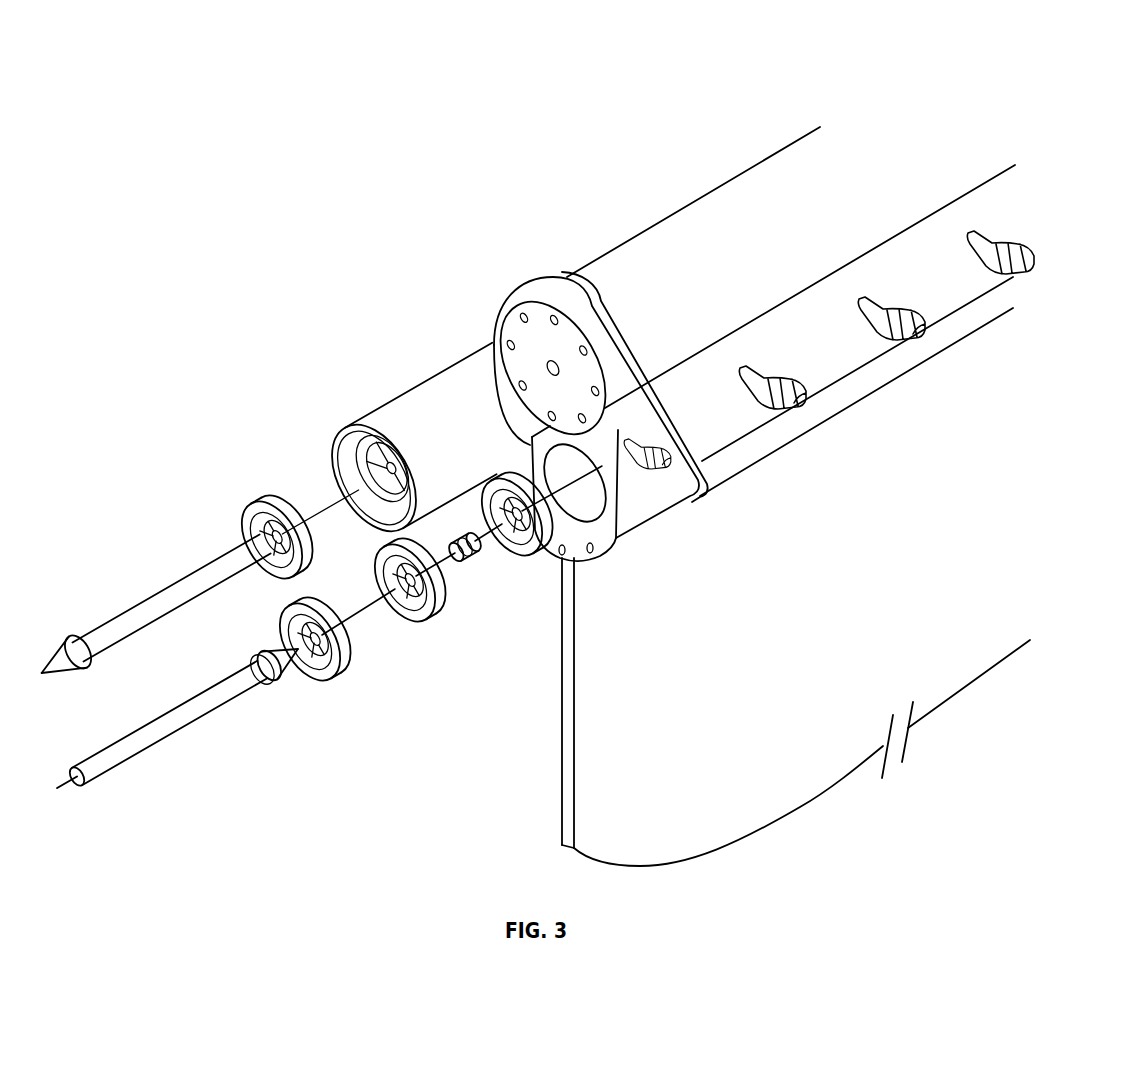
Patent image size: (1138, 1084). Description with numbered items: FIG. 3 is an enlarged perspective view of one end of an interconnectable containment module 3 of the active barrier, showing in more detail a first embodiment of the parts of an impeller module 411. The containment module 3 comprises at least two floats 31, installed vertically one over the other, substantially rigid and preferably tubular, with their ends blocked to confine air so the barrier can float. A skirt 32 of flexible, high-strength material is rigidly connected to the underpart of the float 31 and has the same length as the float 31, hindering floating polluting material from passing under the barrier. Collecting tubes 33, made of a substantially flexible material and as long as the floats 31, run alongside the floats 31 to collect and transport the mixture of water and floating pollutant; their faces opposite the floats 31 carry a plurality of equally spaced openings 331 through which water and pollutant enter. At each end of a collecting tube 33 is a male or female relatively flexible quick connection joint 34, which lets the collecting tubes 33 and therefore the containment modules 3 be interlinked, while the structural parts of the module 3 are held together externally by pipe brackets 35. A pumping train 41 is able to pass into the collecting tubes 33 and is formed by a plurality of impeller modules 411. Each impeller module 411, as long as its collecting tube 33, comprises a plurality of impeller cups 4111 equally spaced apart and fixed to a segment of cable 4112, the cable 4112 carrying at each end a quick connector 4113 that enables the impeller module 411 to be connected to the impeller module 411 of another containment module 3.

The containment module 3 is at (338, 177).
The float 31 is at (791, 240).
The skirt 32 is at (858, 632).
The collecting tube 33 is at (814, 419).
The opening 331 is at (924, 403).
The quick connection joint 34 is at (319, 400).
The pipe bracket 35 is at (593, 332).
The pumping train 41 is at (215, 718).
The impeller module 411 is at (430, 666).
The impeller cup 4111 is at (200, 546).
The segment of cable 4112 is at (251, 430).
The quick connector 4113 is at (364, 674).